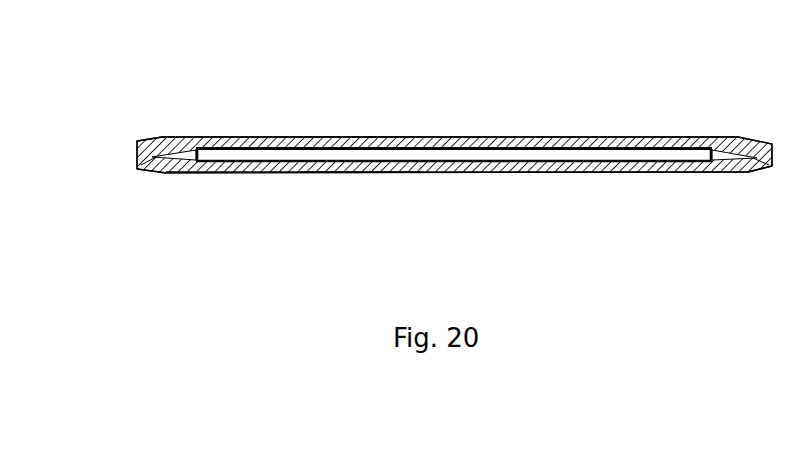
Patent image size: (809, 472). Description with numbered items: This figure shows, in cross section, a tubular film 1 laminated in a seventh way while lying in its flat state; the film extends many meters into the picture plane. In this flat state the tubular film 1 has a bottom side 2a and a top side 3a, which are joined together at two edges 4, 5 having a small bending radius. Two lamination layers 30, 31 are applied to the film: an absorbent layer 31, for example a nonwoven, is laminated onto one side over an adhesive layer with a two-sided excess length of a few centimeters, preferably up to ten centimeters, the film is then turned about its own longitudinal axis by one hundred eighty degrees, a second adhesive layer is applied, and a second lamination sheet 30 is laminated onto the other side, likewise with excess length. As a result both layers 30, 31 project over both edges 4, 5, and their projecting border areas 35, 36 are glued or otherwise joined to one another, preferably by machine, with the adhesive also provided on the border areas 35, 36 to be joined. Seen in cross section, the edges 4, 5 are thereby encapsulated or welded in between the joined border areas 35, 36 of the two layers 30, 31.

The tubular film 1 is at (236, 144).
The bottom side 2a is at (363, 198).
The top side 3a is at (360, 118).
The edge 4 is at (172, 173).
The edge 5 is at (731, 168).
The second lamination sheet 30 is at (460, 137).
The absorbent layer 31 is at (482, 173).
The projecting border area 35 is at (156, 138).
The projecting border area 36 is at (152, 168).